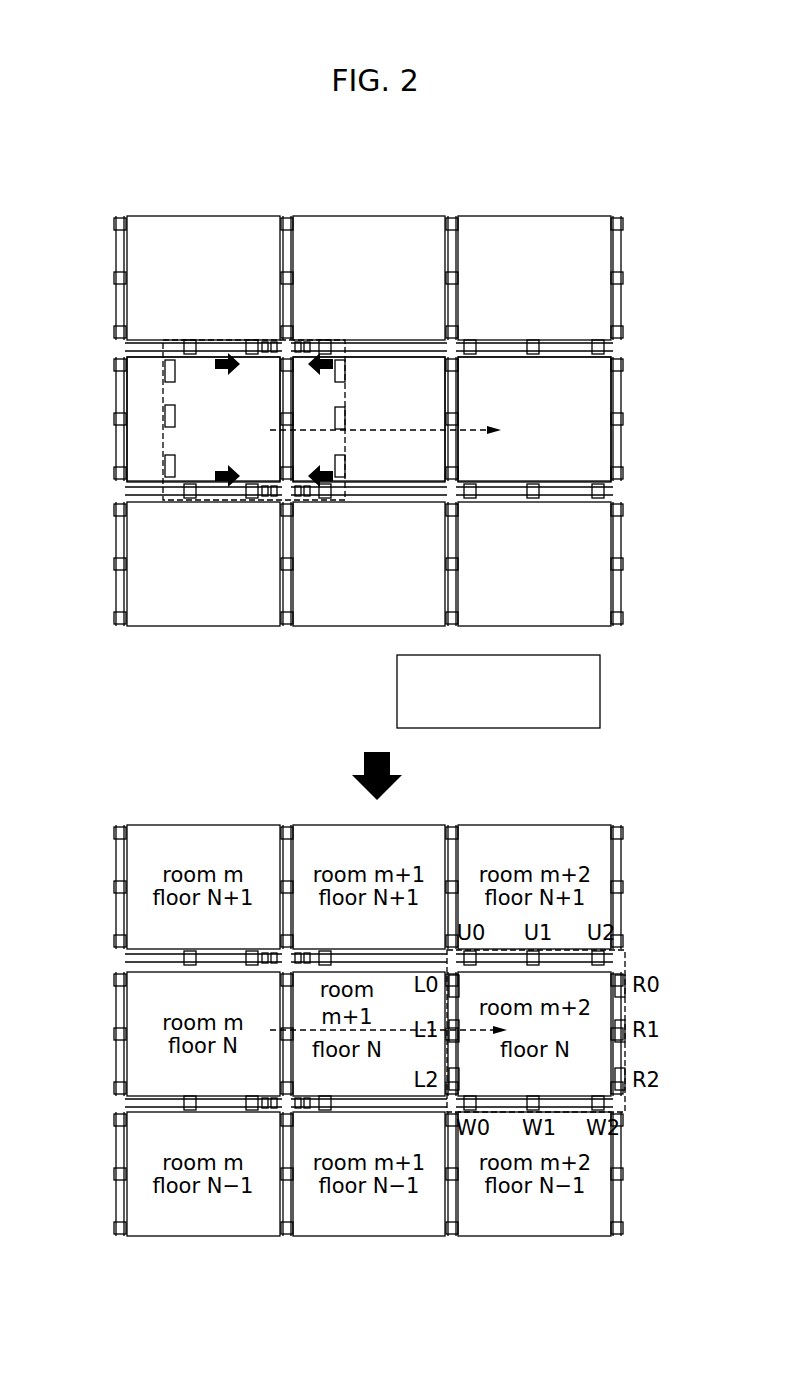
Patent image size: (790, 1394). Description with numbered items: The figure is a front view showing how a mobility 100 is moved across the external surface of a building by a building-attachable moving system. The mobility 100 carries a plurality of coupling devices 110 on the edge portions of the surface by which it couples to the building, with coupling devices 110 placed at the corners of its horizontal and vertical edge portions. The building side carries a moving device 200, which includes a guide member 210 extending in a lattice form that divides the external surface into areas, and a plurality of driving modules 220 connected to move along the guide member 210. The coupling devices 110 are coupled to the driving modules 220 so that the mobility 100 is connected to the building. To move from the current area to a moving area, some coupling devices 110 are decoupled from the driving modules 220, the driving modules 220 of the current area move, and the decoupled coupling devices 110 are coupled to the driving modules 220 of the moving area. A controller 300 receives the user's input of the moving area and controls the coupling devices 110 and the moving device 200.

The mobility 100 is at (160, 350).
The coupling device 110 is at (190, 345).
The moving device 200 is at (641, 240).
The guide member 210 is at (455, 217).
The driving module 220 is at (126, 277).
The controller 300 is at (498, 691).